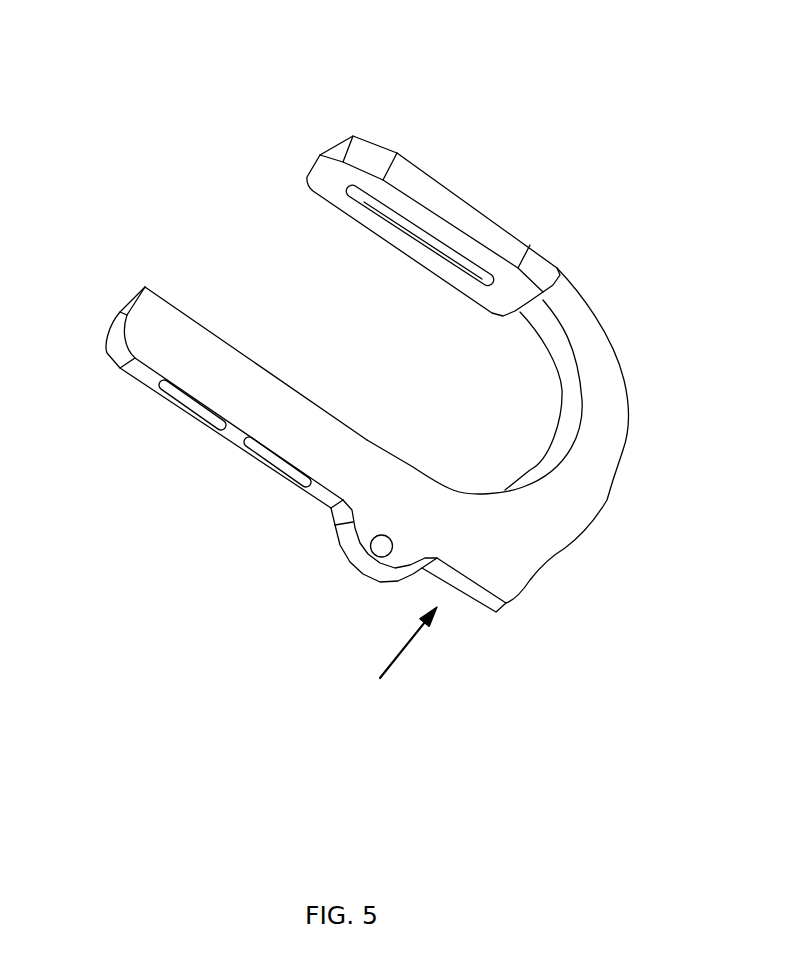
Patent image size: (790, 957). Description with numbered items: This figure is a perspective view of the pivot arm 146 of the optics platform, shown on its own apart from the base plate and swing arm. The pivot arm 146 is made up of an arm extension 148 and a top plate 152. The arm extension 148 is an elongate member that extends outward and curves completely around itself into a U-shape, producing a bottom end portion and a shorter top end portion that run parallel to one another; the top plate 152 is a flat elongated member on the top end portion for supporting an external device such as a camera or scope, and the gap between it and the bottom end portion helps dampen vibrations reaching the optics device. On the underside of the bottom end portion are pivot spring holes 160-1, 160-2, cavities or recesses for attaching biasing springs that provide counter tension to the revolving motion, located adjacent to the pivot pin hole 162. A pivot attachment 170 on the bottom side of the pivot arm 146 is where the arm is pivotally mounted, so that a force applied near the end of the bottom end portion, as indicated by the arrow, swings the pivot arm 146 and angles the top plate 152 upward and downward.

The pivot arm 146 is at (96, 79).
The top plate 152 is at (498, 218).
The arm extension 148 is at (626, 388).
The pivot spring hole 160-1 is at (190, 413).
The pivot spring hole 160-2 is at (270, 470).
The pivot attachment 170 is at (333, 540).
The pivot pin hole 162 is at (380, 555).